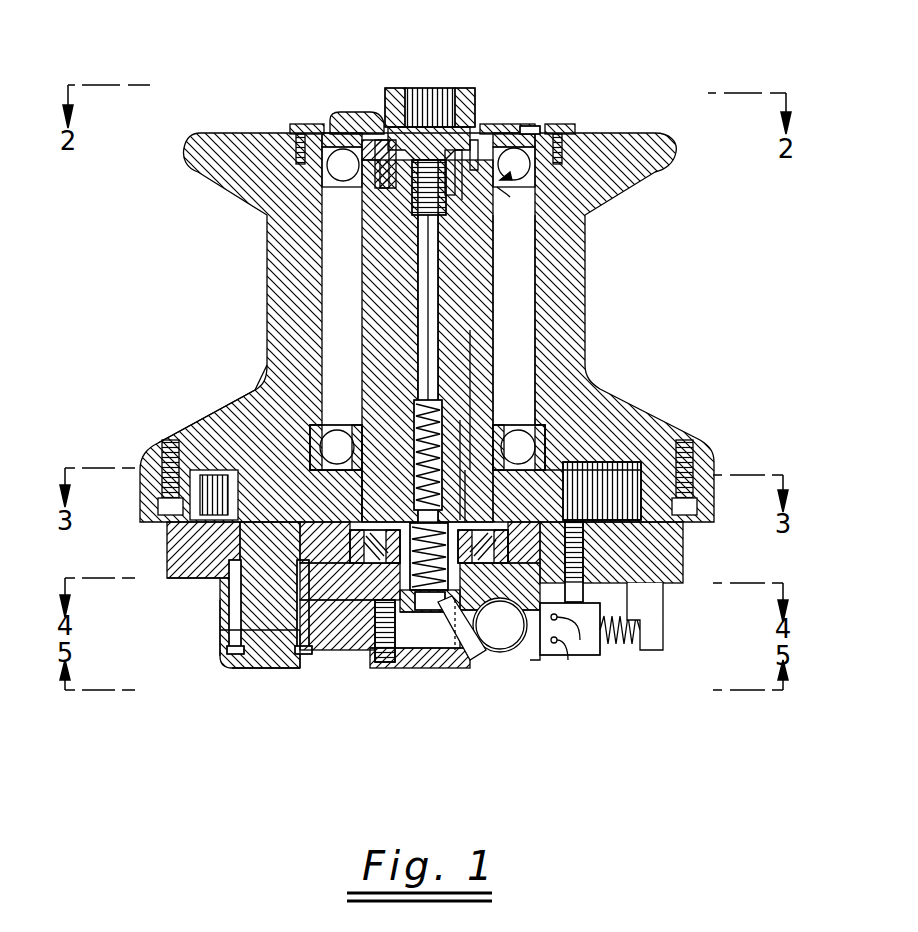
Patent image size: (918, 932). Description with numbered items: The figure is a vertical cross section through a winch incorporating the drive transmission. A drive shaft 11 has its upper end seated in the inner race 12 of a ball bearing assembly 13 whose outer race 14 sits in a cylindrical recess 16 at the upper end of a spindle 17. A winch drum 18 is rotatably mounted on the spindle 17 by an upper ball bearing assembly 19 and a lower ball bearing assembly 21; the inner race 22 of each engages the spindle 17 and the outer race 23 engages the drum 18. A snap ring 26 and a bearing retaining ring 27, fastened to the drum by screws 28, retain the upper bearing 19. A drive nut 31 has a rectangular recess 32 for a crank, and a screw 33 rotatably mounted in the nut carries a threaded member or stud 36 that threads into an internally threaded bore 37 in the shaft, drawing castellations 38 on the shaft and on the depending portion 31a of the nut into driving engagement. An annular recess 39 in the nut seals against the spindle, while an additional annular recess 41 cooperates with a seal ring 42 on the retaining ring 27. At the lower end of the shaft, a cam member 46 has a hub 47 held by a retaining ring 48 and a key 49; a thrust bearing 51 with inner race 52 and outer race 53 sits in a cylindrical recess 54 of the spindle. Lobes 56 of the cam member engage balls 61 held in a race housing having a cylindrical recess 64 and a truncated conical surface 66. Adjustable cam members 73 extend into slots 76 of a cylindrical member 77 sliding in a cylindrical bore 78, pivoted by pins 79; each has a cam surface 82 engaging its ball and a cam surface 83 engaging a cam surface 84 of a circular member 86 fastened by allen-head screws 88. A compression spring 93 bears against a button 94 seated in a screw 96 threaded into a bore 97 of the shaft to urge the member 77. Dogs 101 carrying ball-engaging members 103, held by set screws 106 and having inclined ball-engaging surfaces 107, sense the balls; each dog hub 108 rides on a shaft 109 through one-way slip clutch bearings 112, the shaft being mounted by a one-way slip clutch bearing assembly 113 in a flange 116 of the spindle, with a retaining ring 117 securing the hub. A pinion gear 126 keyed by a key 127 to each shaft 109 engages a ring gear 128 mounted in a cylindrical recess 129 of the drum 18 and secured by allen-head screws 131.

The drive shaft 11 is at (448, 322).
The inner race 12 is at (479, 177).
The ball bearing assembly 13 is at (455, 145).
The outer race 14 is at (378, 193).
The cylindrical recess 16 is at (384, 103).
The spindle 17 is at (495, 338).
The winch drum 18 is at (590, 248).
The upper ball bearing assembly 19 is at (536, 132).
The lower ball bearing assembly 21 is at (522, 428).
The inner race 22 is at (516, 425).
The outer race 23 is at (542, 180).
The snap ring 26 is at (492, 132).
The bearing retaining ring 27 is at (318, 127).
The screws 28 is at (556, 132).
The drive nut 31 is at (443, 90).
The depending portion 31a is at (388, 238).
The rectangular recess 32 is at (398, 92).
The screw 33 is at (422, 125).
The member or stud 36 is at (428, 220).
The internally threaded bore 37 is at (366, 285).
The castellations 38 is at (452, 150).
The annular recess 39 is at (352, 127).
The additional annular recess 41 is at (530, 134).
The seal ring 42 is at (315, 128).
The cam member 46 is at (334, 650).
The hub 47 is at (380, 468).
The retaining ring 48 is at (350, 622).
The key 49 is at (478, 623).
The thrust bearing 51 is at (376, 500).
The inner race 52 is at (603, 455).
The outer race 53 is at (590, 470).
The cylindrical recess 54 is at (417, 445).
The lobes 56 is at (347, 650).
The balls 61 is at (506, 660).
The cylindrical recess 64 is at (330, 606).
The truncated conical surface 66 is at (352, 596).
The adjustable cam members 73 is at (472, 658).
The slots 76 is at (425, 668).
The cylindrical member 77 is at (406, 665).
The cylindrical bore 78 is at (385, 668).
The pins 79 is at (418, 668).
The cam surface 82 is at (481, 639).
The cam surface 83 is at (494, 656).
The cam surface 84 is at (457, 650).
The circular member 86 is at (365, 670).
The allen-head screws 88 is at (391, 668).
The compression spring 93 is at (519, 447).
The button 94 is at (470, 520).
The screw 96 is at (462, 500).
The bore 97 is at (468, 468).
The dogs 101 is at (609, 655).
The ball-engaging member 103 is at (550, 660).
The set screws 106 is at (572, 652).
The inclined ball-engaging surfaces 107 is at (533, 662).
The hub 108 is at (224, 637).
The shaft 109 is at (282, 658).
The one-way slip clutch bearings 112 is at (260, 660).
The one-way slip clutch bearing assembly 113 is at (234, 556).
The flange 116 is at (182, 543).
The retaining ring 117 is at (238, 660).
The pinion gear 126 is at (208, 463).
The key 127 is at (244, 442).
The ring gear 128 is at (160, 482).
The cylindrical recess 129 is at (703, 495).
The allen-head screws 131 is at (172, 506).